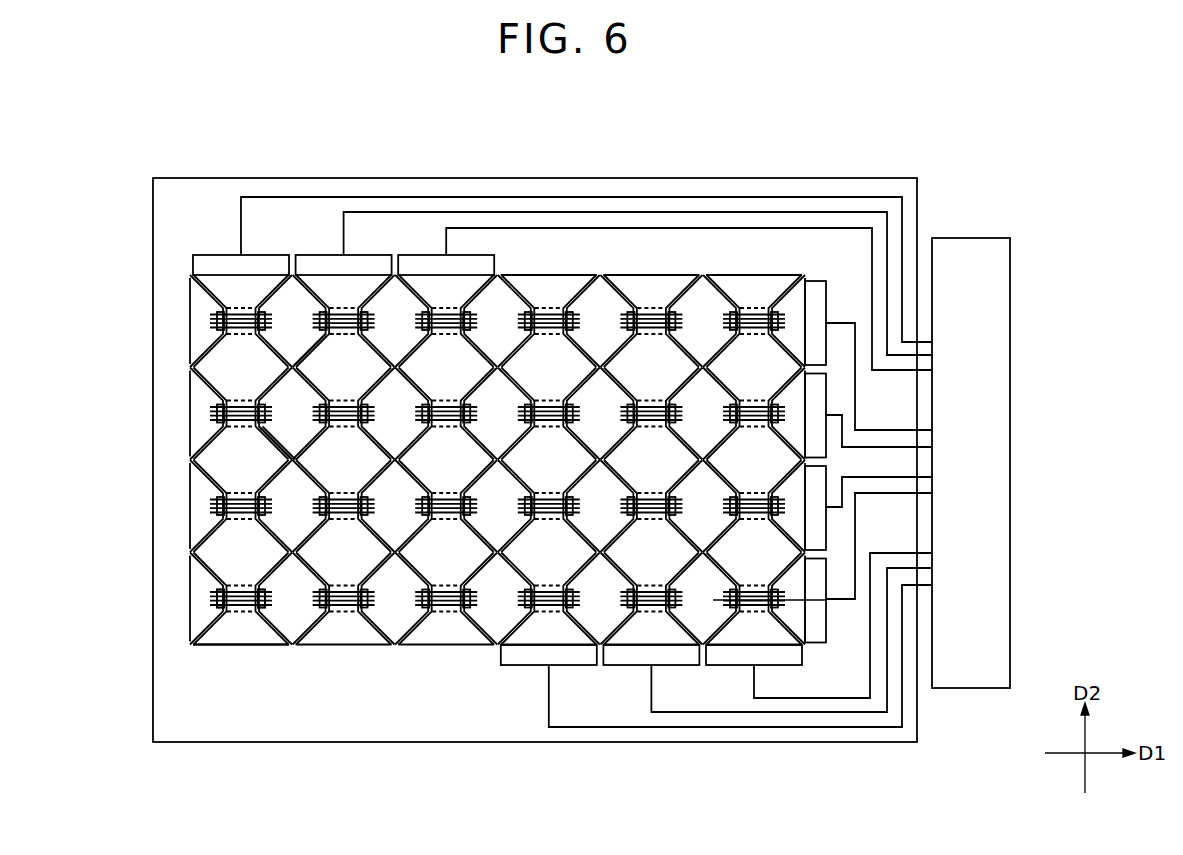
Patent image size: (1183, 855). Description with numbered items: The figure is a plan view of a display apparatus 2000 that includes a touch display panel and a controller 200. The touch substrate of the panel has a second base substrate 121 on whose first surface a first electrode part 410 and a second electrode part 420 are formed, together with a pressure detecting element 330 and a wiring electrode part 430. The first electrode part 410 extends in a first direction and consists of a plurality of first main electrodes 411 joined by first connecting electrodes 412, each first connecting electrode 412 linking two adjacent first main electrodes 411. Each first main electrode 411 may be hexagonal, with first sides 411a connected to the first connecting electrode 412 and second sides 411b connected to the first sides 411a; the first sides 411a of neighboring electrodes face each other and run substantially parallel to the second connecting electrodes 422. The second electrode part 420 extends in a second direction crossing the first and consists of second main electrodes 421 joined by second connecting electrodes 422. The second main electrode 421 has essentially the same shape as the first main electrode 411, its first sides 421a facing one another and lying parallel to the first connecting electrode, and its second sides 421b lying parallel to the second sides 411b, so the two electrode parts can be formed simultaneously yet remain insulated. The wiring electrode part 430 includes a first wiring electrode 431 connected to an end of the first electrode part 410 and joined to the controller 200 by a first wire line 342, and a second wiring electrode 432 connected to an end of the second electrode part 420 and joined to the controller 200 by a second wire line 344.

The display apparatus 2000 is at (568, 168).
The second base substrate 121 is at (218, 178).
The controller 200 is at (972, 238).
The first electrode part 410 is at (92, 288).
The first main electrode 411 is at (190, 330).
The first connecting electrode 412 is at (213, 317).
The first side 411a is at (258, 428).
The second side 411b is at (278, 447).
The first side 421a is at (340, 337).
The second side 421b is at (303, 353).
The second main electrode 421 is at (246, 646).
The second connecting electrode 422 is at (217, 592).
The second electrode part 420 is at (267, 785).
The pressure detecting element 330 is at (272, 596).
The wiring electrode part 430 is at (902, 784).
The first wiring electrode 431 is at (808, 647).
The second wiring electrode 432 is at (531, 667).
The first wire line 342 is at (840, 599).
The second wire line 344 is at (672, 727).